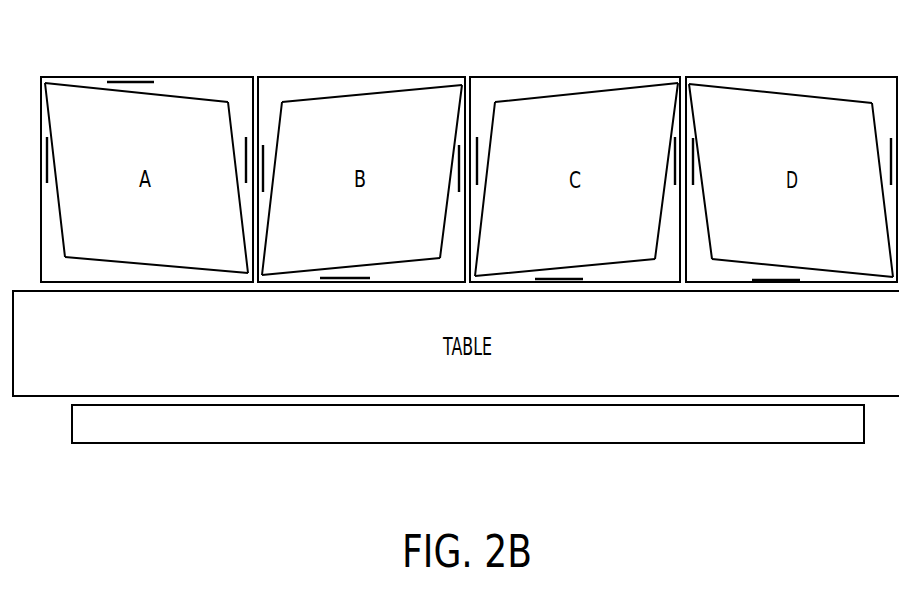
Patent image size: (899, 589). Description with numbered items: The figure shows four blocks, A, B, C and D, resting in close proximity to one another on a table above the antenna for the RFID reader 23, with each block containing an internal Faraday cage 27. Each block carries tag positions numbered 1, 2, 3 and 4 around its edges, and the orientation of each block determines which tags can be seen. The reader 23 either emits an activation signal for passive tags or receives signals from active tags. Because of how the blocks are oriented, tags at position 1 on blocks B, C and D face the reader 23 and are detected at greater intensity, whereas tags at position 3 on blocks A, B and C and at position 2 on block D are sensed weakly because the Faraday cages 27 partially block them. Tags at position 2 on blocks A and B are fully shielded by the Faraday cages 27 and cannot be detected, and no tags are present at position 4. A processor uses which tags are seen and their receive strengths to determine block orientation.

The internal Faraday cage 27 is at (294, 99).
The antenna for the RFID reader 23 is at (468, 444).
The tag position 1 is at (469, 180).
The tag position 2 is at (468, 180).
The tag position 3 is at (469, 180).
The tag position 4 is at (468, 178).